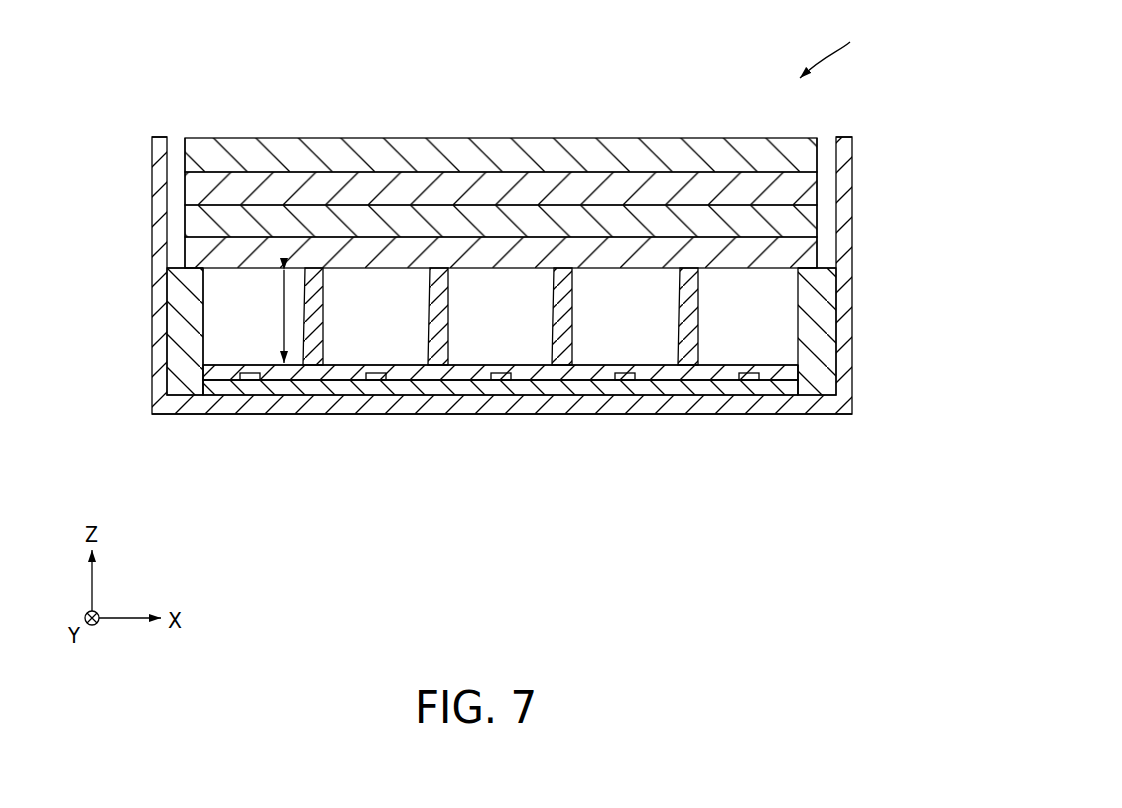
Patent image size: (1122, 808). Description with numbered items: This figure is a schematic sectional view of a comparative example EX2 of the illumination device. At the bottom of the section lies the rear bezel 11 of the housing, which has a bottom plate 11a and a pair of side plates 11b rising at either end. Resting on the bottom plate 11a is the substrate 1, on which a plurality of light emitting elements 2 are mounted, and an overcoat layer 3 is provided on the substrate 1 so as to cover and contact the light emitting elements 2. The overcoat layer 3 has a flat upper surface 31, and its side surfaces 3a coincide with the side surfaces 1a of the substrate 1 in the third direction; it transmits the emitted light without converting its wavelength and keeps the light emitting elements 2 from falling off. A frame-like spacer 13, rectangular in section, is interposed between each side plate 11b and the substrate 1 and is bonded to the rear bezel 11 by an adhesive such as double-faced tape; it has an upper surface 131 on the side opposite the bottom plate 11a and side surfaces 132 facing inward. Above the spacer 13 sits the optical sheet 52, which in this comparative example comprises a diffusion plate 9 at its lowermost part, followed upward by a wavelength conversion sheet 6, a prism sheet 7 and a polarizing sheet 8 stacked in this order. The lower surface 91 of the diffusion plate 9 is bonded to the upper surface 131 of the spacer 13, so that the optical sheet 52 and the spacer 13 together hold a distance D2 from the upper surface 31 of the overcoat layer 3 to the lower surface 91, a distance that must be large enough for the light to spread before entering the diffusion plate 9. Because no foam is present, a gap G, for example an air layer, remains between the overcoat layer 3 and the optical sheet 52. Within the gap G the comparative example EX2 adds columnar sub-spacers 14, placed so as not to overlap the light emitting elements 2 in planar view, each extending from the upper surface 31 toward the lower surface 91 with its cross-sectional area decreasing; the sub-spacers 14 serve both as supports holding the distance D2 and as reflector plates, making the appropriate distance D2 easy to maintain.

The rear bezel 11 is at (147, 399).
The bottom plate 11a is at (615, 400).
The side plates 11b is at (161, 152).
The spacer 13 is at (178, 328).
The upper surface 131 is at (180, 261).
The side surfaces 132 is at (207, 325).
The lower surface 91 is at (192, 273).
The gap G is at (226, 347).
The distance D2 is at (269, 316).
The optical sheet 52 is at (556, 203).
The polarizing sheet 8 is at (800, 153).
The prism sheet 7 is at (800, 188).
The wavelength conversion sheet 6 is at (800, 220).
The diffusion plate 9 is at (534, 251).
The sub-spacer 14 is at (315, 348).
The substrate 1 is at (672, 387).
The side surfaces 1a is at (200, 388).
The light emitting elements 2 is at (745, 384).
The overcoat layer 3 is at (707, 372).
The side surfaces 3a is at (196, 374).
The upper surface 31 is at (341, 356).
The comparative example EX2 is at (831, 47).